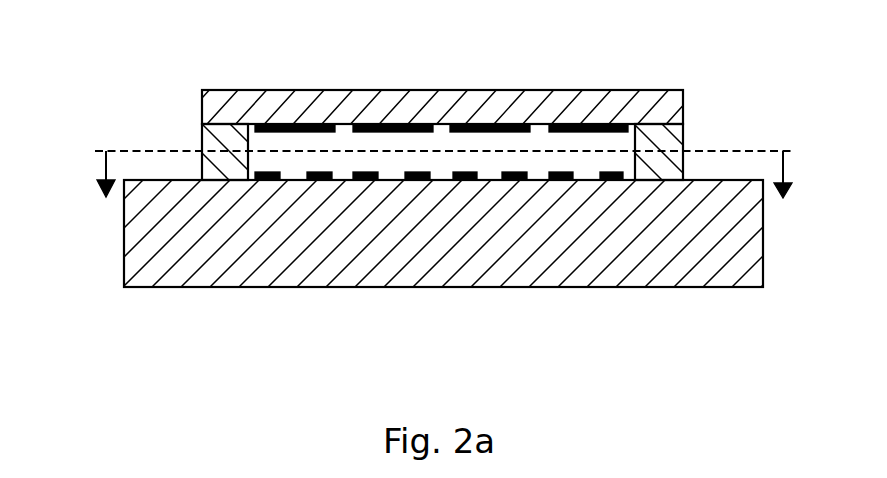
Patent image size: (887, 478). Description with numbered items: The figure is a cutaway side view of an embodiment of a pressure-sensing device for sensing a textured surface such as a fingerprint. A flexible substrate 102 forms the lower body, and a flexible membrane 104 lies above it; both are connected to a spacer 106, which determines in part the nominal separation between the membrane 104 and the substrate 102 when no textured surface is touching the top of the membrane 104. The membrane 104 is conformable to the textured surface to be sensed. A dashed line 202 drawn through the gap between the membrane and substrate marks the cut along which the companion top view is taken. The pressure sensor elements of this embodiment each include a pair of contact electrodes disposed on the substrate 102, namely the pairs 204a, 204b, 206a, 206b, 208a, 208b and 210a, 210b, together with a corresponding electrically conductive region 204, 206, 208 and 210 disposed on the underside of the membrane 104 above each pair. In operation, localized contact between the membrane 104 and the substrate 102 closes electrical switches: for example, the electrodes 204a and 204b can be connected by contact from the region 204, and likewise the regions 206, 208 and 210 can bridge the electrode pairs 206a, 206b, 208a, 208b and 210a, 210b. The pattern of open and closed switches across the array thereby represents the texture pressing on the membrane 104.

The flexible substrate 102 is at (147, 250).
The flexible membrane 104 is at (243, 97).
The spacer 106 is at (202, 138).
The line 202 is at (745, 151).
The electrically conductive region 204 is at (303, 124).
The electrically conductive region 206 is at (390, 124).
The electrically conductive region 208 is at (483, 124).
The electrically conductive region 210 is at (583, 124).
The contact electrode 204a is at (265, 180).
The contact electrode 204b is at (318, 180).
The contact electrode 206a is at (367, 180).
The contact electrode 206b is at (420, 180).
The contact electrode 208a is at (465, 180).
The contact electrode 208b is at (513, 180).
The contact electrode 210a is at (567, 180).
The contact electrode 210b is at (613, 180).